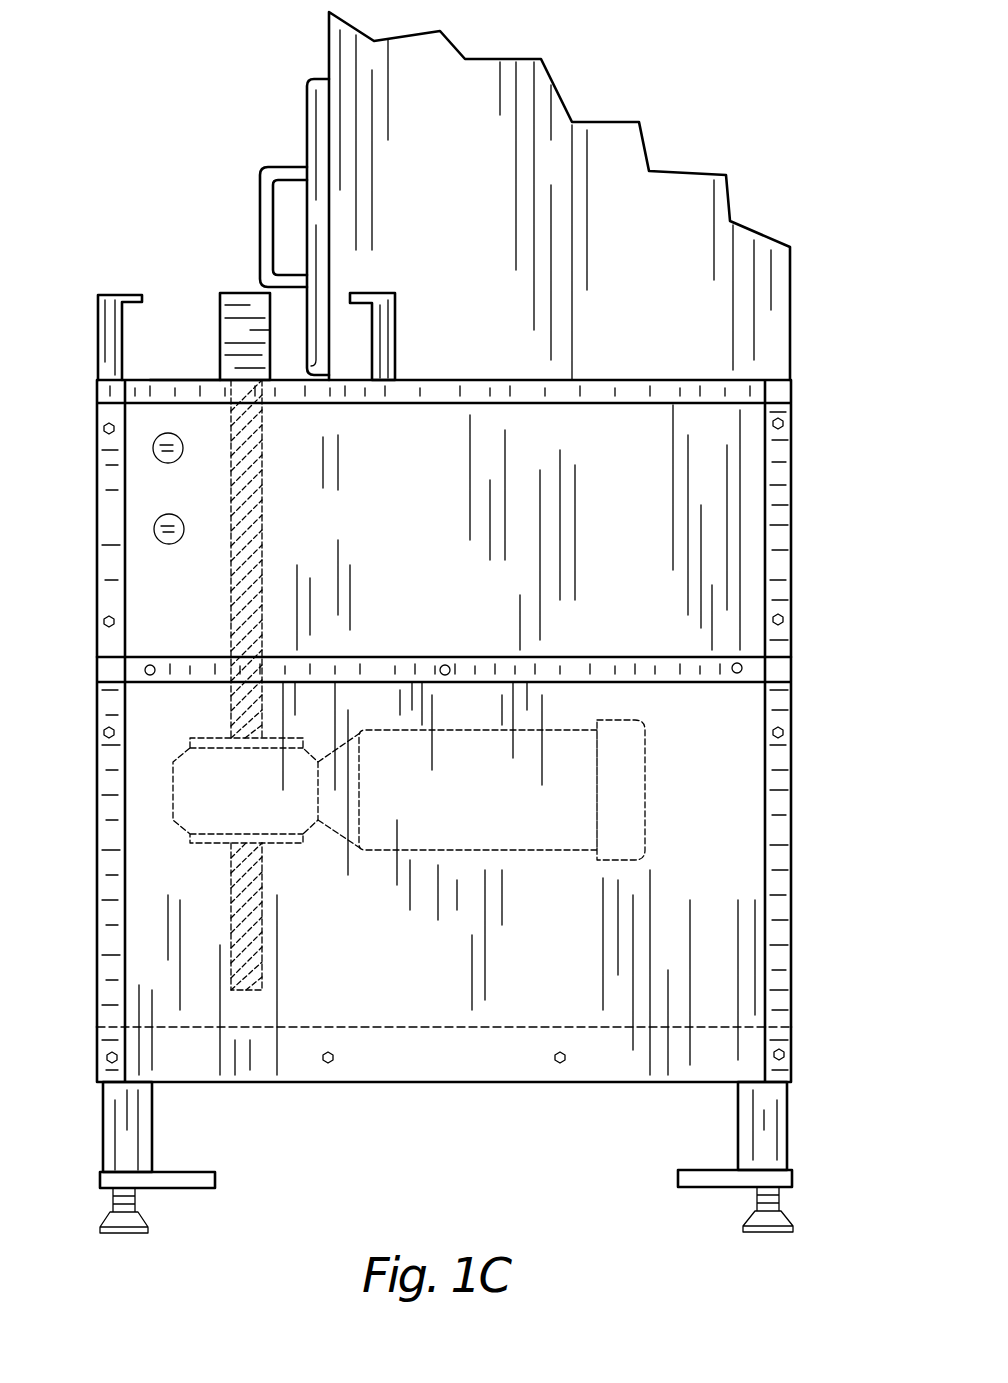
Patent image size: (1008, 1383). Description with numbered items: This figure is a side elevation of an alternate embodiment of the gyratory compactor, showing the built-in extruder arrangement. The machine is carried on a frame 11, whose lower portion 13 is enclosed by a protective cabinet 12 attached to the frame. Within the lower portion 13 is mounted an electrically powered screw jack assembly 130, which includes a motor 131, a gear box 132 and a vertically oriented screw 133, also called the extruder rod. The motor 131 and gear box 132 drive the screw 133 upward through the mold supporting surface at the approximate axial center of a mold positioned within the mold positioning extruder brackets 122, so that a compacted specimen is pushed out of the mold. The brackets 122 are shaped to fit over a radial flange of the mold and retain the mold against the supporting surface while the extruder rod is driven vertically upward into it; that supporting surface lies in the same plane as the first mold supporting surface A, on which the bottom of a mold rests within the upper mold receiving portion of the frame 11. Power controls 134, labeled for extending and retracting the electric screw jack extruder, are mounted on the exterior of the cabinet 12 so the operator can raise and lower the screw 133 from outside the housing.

The mold positioning extruder brackets 122 is at (108, 323).
The first mold supporting surface A is at (190, 370).
The power controls 134 is at (153, 533).
The screw 133 is at (245, 483).
The cabinet 12 is at (810, 586).
The lower portion 13 is at (812, 776).
The frame 11 is at (810, 1036).
The screw jack assembly 130 is at (409, 841).
The motor 131 is at (507, 827).
The gear box 132 is at (270, 790).